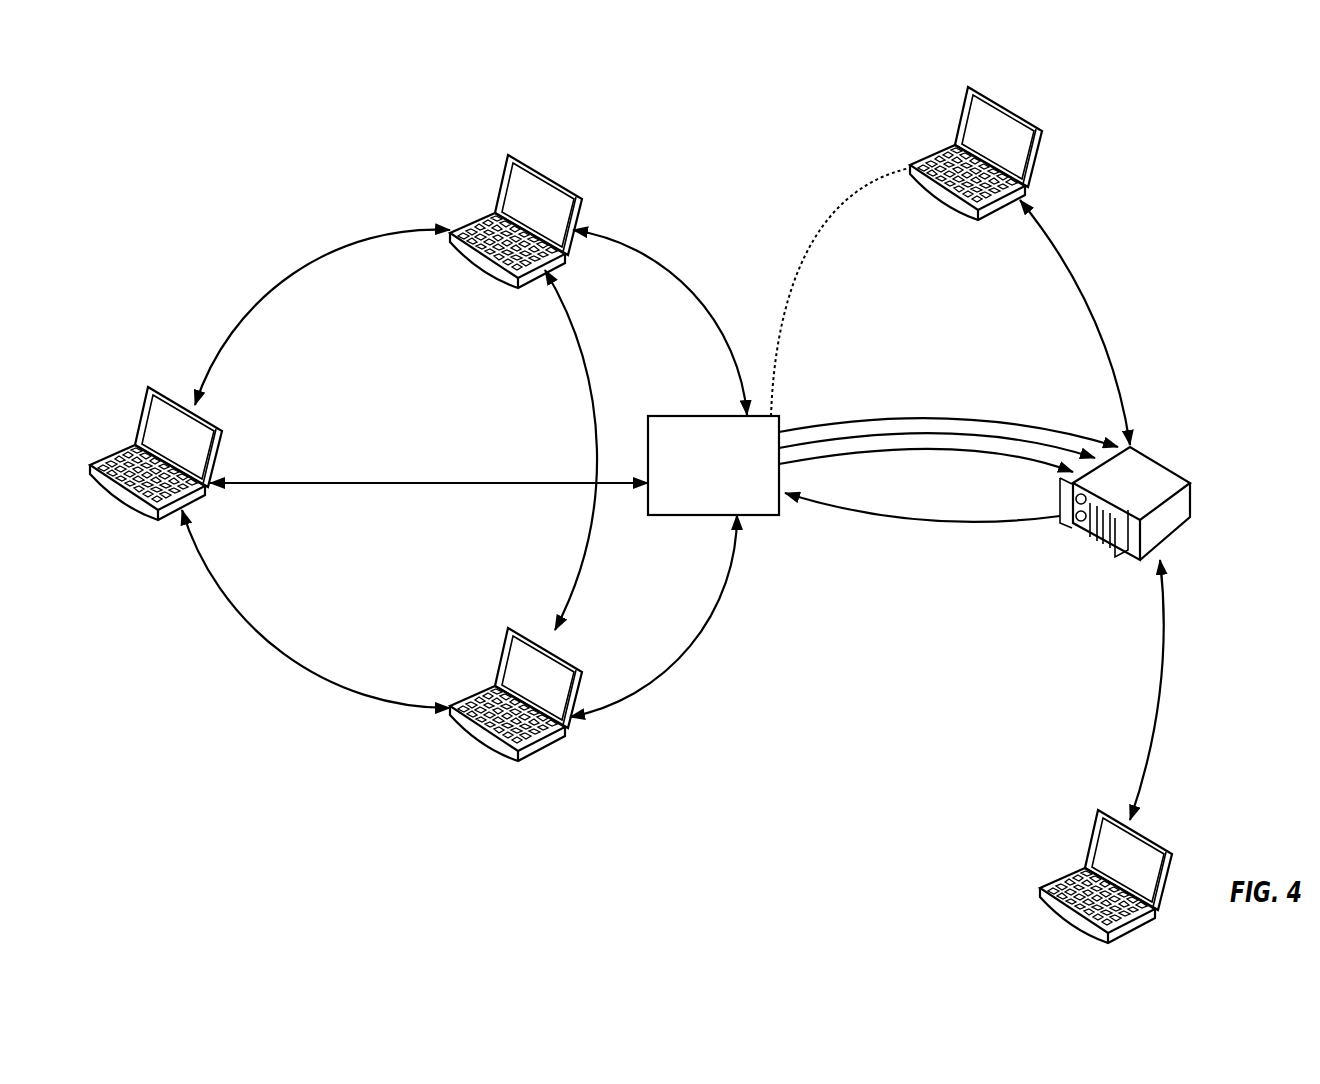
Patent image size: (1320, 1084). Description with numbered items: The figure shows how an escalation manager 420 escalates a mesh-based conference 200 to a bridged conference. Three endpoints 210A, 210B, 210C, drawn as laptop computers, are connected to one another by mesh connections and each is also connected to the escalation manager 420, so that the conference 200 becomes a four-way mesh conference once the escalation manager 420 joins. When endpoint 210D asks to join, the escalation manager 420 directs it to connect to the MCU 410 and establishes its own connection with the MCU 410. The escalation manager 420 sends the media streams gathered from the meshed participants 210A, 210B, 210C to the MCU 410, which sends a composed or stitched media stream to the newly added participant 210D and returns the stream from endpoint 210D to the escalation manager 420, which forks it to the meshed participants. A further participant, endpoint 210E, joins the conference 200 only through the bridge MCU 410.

The mesh-based conference session 200 is at (688, 152).
The endpoint 210A is at (220, 443).
The endpoint 210B is at (473, 215).
The endpoint 210C is at (543, 745).
The endpoint 210D is at (1035, 155).
The endpoint 210E is at (1173, 848).
The MCU 410 is at (1168, 468).
The escalation manager 420 is at (755, 515).